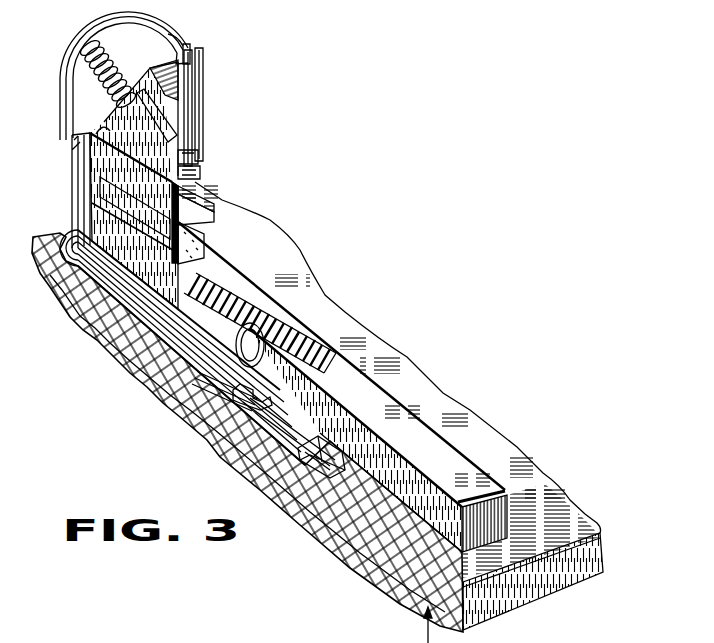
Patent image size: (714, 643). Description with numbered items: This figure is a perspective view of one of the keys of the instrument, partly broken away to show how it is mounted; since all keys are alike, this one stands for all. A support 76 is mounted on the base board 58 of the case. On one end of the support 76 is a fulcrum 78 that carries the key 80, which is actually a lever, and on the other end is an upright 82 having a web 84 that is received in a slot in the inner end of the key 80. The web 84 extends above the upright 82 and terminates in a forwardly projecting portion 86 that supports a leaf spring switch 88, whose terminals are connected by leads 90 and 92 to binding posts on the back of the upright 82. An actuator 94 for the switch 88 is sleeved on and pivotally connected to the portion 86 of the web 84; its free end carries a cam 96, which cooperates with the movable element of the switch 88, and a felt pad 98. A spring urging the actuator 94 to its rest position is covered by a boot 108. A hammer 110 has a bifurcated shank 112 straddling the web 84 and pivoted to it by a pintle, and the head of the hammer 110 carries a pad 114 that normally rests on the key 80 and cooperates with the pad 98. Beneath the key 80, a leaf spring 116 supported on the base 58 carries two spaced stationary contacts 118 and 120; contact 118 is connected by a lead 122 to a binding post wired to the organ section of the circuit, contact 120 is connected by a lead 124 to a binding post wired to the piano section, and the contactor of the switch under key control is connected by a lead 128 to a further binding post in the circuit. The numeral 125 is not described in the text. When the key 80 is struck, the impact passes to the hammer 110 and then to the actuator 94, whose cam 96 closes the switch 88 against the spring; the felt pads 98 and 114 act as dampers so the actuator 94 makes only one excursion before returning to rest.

The base board 58 is at (66, 307).
The support 76 is at (152, 292).
The fulcrum 78 is at (282, 337).
The key 80 is at (387, 407).
The upright 82 is at (80, 168).
The web 84 is at (90, 175).
The forwardly projecting portion 86 is at (193, 67).
The leaf spring switch 88 is at (200, 90).
The lead 90 is at (65, 57).
The lead 92 is at (170, 26).
The actuator 94 is at (163, 128).
The cam 96 is at (193, 155).
The felt pad 98 is at (195, 173).
The boot 108 is at (110, 70).
The hammer 110 is at (210, 223).
The bifurcated shank 112 is at (222, 200).
The pad 114 is at (197, 248).
The leaf spring 116 is at (262, 436).
The stationary contact 118 is at (307, 473).
The stationary contact 120 is at (320, 467).
The lead 122 is at (243, 400).
The lead 124 is at (215, 358).
The clamp plate 125 is at (318, 474).
The lead 128 is at (177, 353).